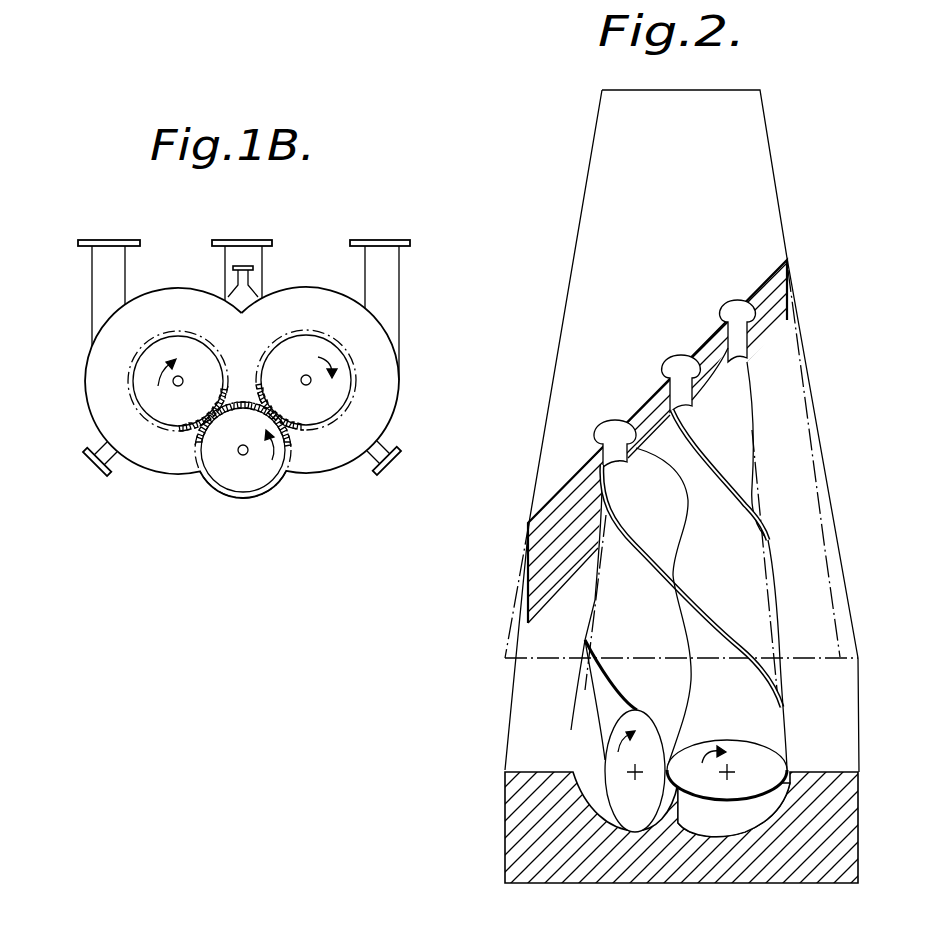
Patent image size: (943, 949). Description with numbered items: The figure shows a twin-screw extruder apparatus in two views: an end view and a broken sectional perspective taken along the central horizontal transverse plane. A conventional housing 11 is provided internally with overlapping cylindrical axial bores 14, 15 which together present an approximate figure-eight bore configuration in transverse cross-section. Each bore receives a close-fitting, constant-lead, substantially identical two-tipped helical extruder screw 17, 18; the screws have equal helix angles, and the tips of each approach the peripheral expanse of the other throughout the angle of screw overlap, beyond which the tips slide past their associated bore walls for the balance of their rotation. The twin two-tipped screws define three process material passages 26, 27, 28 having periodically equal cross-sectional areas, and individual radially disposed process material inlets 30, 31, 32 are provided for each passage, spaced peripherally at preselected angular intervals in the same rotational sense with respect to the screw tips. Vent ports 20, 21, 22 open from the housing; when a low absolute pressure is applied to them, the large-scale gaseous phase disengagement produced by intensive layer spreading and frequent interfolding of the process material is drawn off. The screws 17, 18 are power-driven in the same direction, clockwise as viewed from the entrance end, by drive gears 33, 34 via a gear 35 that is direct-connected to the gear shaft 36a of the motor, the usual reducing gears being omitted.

In FIG. 2, the housing 11 is at (668, 292).
In FIG. 2, the cylindrical axial bore 14 is at (603, 845).
In FIG. 2, the cylindrical axial bore 15 is at (750, 450).
In FIG. 2, the helical extruder screw 17 is at (603, 634).
In FIG. 2, the helical extruder screw 18 is at (747, 586).
In FIG. 1B, the vent port 20 is at (102, 264).
In FIG. 2, the vent port 20 is at (608, 420).
In FIG. 1B, the vent port 21 is at (243, 255).
In FIG. 2, the vent port 21 is at (680, 357).
In FIG. 1B, the vent port 22 is at (373, 258).
In FIG. 2, the vent port 22 is at (732, 302).
In FIG. 2, the process material passage 26 is at (592, 778).
In FIG. 2, the process material passage 27 is at (757, 727).
In FIG. 2, the process material passage 28 is at (770, 832).
In FIG. 1B, the process material inlet 30 is at (110, 470).
In FIG. 1B, the process material inlet 31 is at (245, 284).
In FIG. 1B, the process material inlet 32 is at (377, 460).
In FIG. 1B, the drive gear 33 is at (139, 370).
In FIG. 1B, the drive gear 34 is at (339, 367).
In FIG. 1B, the gear 35 is at (257, 488).
In FIG. 1B, the gear shaft 36a is at (240, 455).